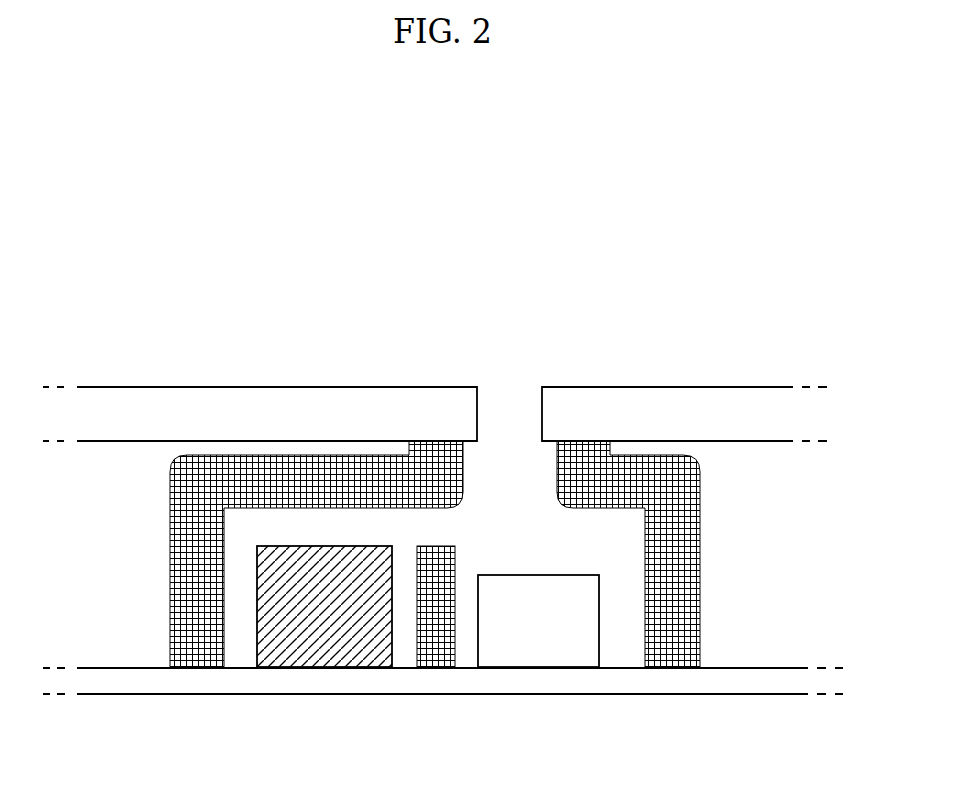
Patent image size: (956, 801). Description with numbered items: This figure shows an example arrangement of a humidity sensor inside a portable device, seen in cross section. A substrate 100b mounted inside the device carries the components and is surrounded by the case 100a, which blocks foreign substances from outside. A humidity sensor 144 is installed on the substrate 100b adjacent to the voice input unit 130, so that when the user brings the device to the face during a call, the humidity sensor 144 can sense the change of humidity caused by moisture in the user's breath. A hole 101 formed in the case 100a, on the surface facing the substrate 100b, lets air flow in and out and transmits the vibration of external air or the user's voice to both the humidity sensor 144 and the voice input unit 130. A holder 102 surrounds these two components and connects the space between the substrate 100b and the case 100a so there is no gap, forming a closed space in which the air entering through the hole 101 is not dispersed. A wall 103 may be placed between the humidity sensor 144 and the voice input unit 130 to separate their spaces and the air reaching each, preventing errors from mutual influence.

The case 100a is at (690, 387).
The substrate 100b is at (688, 695).
The hole 101 is at (507, 412).
The holder 102 is at (195, 654).
The wall 103 is at (438, 655).
The voice input unit 130 is at (322, 663).
The humidity sensor 144 is at (547, 655).